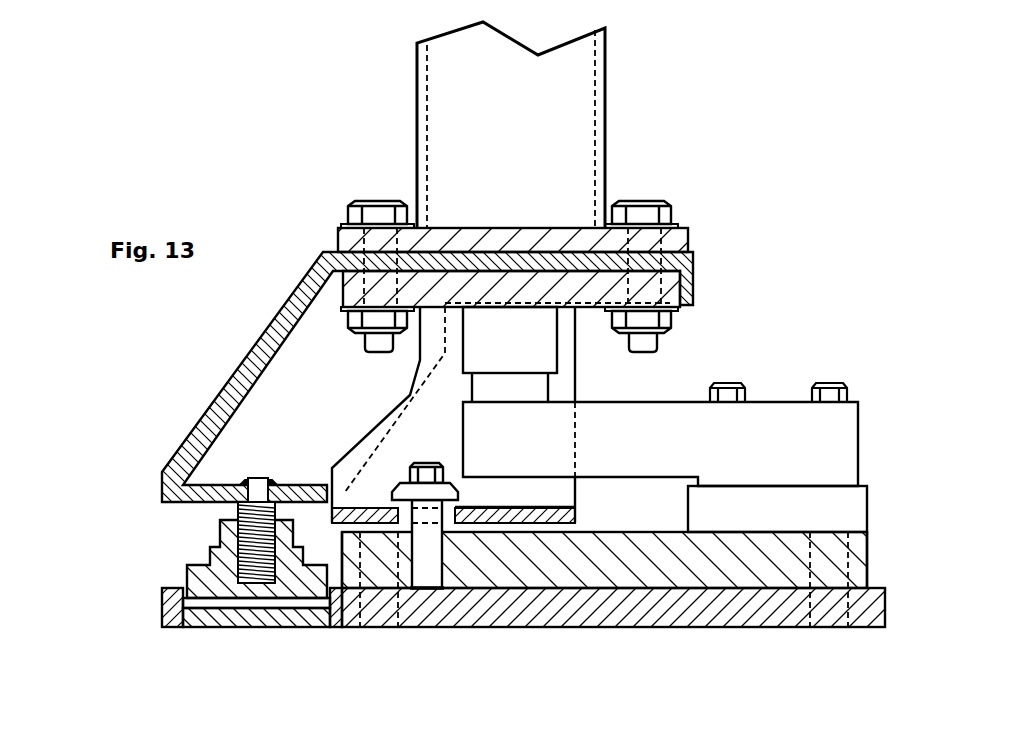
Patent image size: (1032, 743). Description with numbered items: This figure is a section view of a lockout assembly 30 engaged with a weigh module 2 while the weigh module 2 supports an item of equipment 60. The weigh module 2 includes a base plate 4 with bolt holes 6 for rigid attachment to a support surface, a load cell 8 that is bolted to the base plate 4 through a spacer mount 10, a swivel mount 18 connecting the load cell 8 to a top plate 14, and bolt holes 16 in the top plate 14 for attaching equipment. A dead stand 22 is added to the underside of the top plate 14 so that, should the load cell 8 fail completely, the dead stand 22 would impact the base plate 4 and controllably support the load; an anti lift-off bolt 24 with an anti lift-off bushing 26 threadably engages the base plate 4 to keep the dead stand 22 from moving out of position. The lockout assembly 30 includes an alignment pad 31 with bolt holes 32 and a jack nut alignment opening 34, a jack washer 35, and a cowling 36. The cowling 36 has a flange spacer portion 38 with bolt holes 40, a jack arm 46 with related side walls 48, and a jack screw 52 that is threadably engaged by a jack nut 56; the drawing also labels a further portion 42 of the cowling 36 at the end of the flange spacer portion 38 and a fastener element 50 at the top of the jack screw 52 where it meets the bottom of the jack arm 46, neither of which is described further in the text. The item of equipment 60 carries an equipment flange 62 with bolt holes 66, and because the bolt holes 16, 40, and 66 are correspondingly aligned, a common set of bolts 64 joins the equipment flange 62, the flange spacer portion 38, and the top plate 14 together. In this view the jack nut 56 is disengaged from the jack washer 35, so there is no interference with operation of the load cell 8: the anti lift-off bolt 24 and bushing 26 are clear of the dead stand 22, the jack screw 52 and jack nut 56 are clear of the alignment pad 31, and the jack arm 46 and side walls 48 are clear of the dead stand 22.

The weigh module 2 is at (822, 318).
The base plate 4 is at (868, 553).
The bolt holes 6 is at (358, 562).
The load cell 8 is at (860, 433).
The spacer mount 10 is at (868, 498).
The top plate 14 is at (584, 311).
The bolt holes 16 is at (355, 322).
The swivel mount 18 is at (463, 335).
The dead stand 22 is at (402, 414).
The anti lift-off bolt 24 is at (434, 462).
The anti lift-off bushing 26 is at (400, 485).
The lockout assembly 30 is at (456, 556).
The alignment pad 31 is at (596, 628).
The bolt holes 32 is at (378, 625).
The jack nut alignment opening 34 is at (184, 613).
The jack washer 35 is at (258, 628).
The cowling 36 is at (420, 375).
The flange spacer portion 38 is at (447, 248).
The bolt holes 40 is at (330, 260).
The clamp plate 42 is at (694, 282).
The jack arm 46 is at (258, 345).
The side walls 48 is at (400, 400).
The countersunk screw 50 is at (222, 484).
The jack screw 52 is at (240, 510).
The jack nut 56 is at (210, 553).
The item of equipment 60 is at (499, 33).
The equipment flange 62 is at (580, 226).
The bolts 64 is at (378, 199).
The bolt holes 66 is at (345, 240).